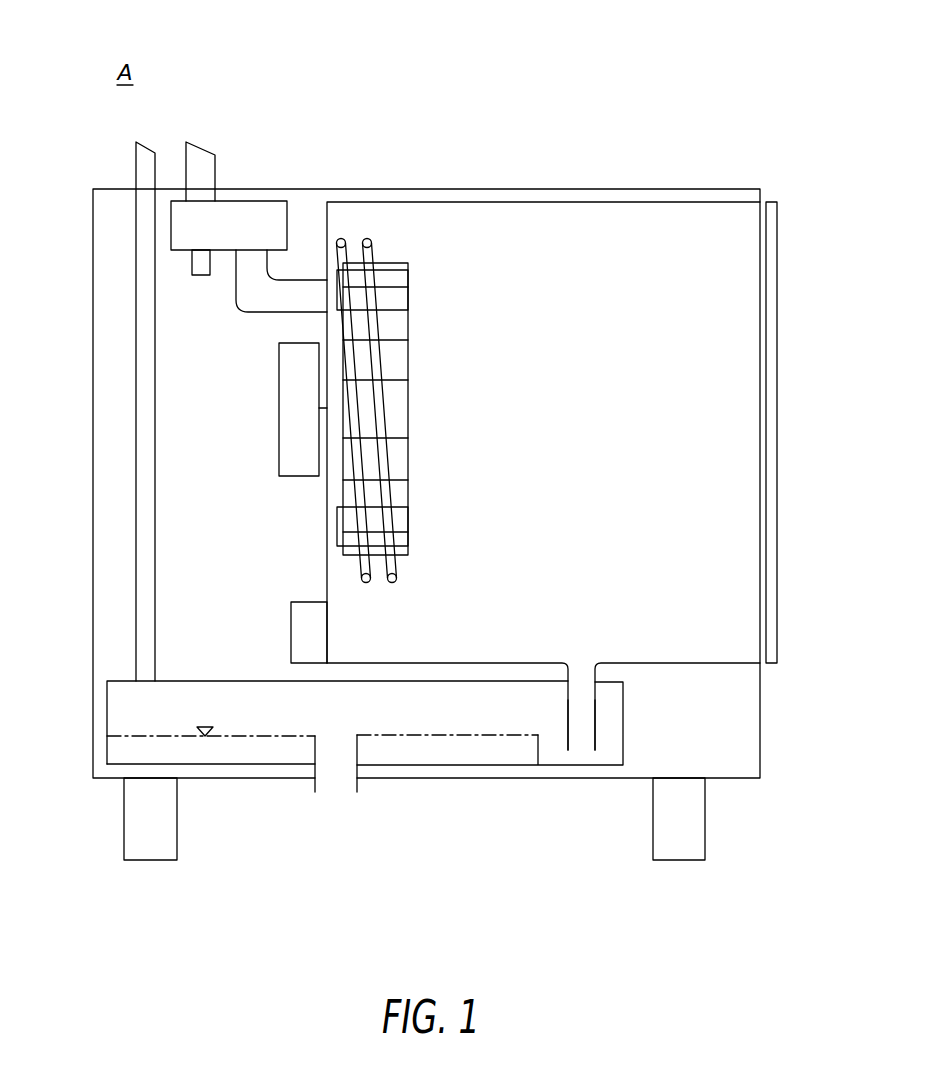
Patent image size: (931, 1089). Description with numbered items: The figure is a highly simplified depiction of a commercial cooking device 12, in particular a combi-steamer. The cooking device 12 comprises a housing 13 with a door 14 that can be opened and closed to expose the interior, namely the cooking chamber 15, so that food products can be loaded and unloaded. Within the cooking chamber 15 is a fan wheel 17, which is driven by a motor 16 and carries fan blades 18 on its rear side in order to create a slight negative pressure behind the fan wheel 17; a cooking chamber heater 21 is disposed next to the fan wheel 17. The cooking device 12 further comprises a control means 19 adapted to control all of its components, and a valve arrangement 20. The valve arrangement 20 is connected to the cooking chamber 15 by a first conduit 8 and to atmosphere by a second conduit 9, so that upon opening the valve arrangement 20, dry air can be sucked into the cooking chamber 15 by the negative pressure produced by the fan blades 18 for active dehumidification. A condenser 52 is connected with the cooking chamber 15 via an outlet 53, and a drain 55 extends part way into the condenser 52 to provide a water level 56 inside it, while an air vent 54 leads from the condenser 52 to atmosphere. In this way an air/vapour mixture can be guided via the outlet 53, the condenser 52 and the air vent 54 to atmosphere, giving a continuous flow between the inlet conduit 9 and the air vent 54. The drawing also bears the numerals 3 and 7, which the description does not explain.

The valve 3 is at (198, 267).
The pump 7 is at (180, 237).
The first conduit 8 is at (261, 290).
The second conduit 9 is at (199, 163).
The commercial cooking device 12 is at (602, 171).
The housing 13 is at (737, 778).
The door 14 is at (770, 297).
The cooking chamber 15 is at (568, 378).
The motor 16 is at (293, 417).
The fan wheel 17 is at (405, 278).
The fan blades 18 is at (337, 285).
The control means 19 is at (306, 638).
The valve arrangement 20 is at (187, 190).
The cooking chamber heater 21 is at (371, 240).
The condenser 52 is at (520, 708).
The outlet 53 is at (580, 713).
The air vent 54 is at (143, 542).
The drain 55 is at (312, 787).
The water level 56 is at (383, 737).